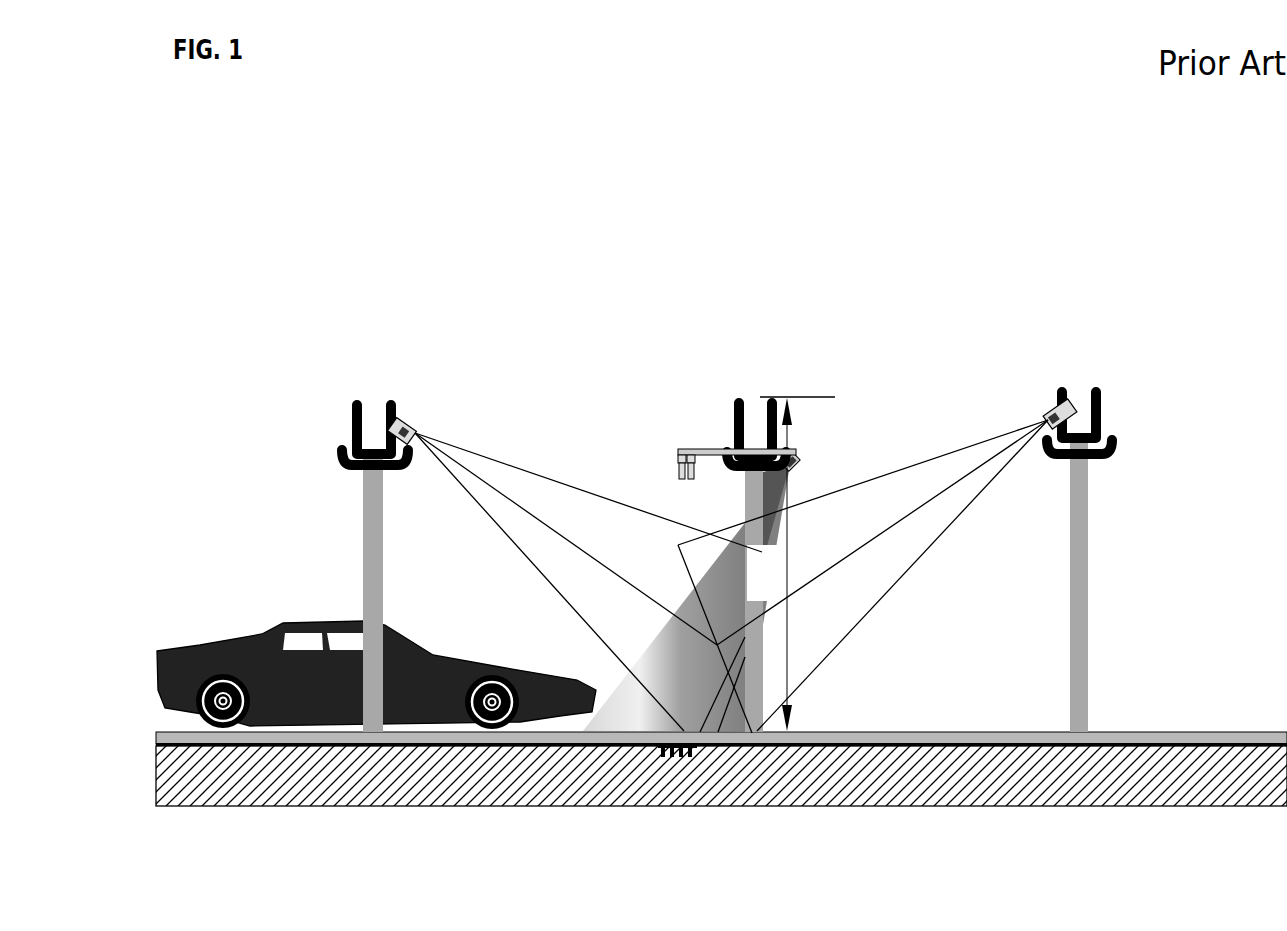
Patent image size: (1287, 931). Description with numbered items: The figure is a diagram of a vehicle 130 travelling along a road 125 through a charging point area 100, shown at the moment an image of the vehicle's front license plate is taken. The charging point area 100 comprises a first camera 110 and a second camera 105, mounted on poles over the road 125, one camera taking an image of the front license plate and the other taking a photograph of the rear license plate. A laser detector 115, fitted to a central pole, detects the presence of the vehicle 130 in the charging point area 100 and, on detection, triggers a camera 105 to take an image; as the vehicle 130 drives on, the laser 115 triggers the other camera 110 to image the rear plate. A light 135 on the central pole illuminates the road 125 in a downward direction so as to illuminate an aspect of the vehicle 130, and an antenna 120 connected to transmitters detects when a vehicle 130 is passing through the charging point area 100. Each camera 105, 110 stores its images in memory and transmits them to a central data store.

The charging point area 100 is at (415, 272).
The camera 105 is at (1044, 396).
The camera 110 is at (381, 393).
The laser detector 115 is at (688, 447).
The antenna 120 is at (753, 395).
The road 125 is at (1168, 730).
The vehicle 130 is at (262, 629).
The light 135 is at (808, 455).